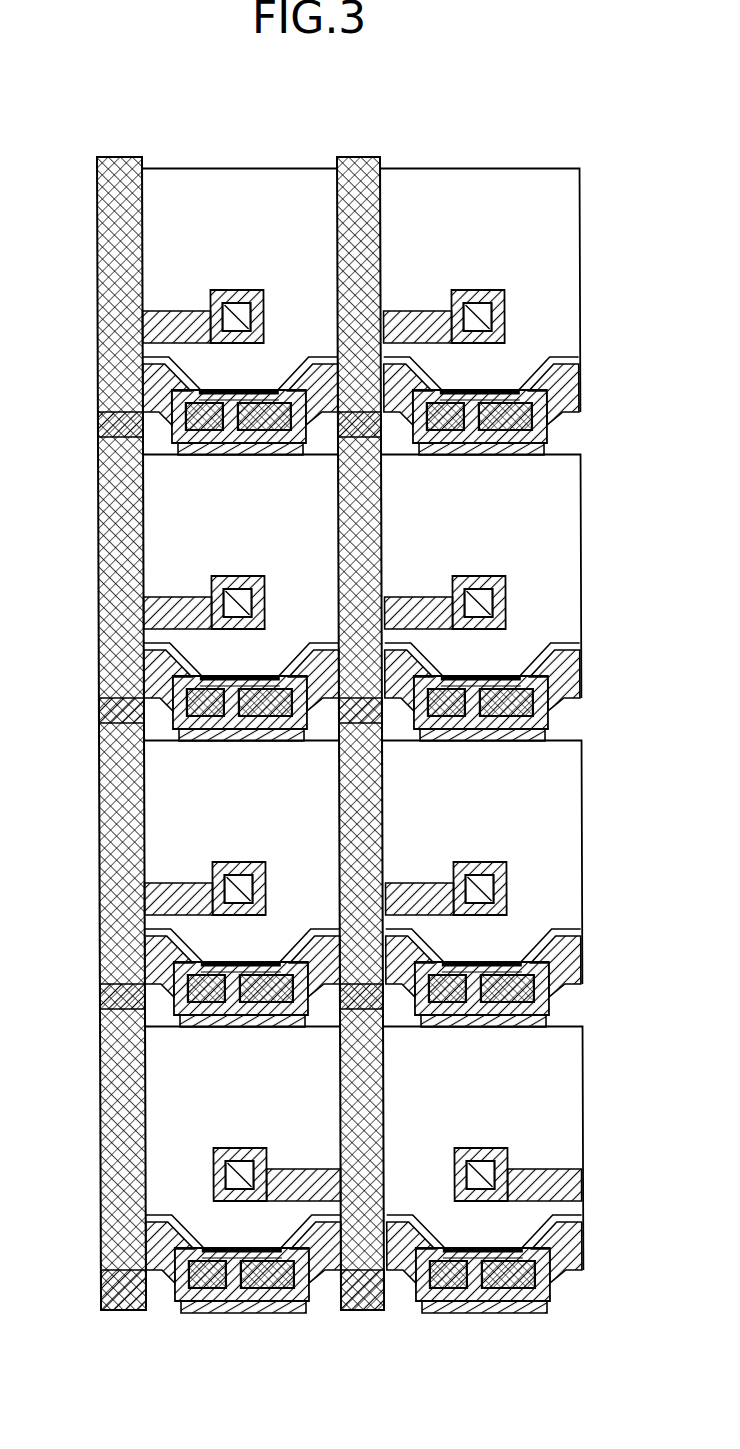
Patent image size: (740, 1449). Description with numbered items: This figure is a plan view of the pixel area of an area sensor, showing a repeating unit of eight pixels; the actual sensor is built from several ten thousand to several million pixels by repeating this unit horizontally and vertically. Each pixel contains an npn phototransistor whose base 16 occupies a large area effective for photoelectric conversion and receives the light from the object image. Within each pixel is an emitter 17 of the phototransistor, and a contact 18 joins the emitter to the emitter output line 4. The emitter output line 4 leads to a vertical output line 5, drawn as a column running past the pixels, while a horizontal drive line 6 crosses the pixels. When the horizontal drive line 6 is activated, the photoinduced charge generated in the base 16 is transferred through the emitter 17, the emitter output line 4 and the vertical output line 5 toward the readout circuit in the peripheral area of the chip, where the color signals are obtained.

The vertical output line 5 is at (97, 196).
The base 16 is at (233, 179).
The emitter output line 4 is at (181, 310).
The emitter 17 is at (237, 291).
The contact 18 is at (250, 306).
The horizontal drive line 6 is at (582, 382).